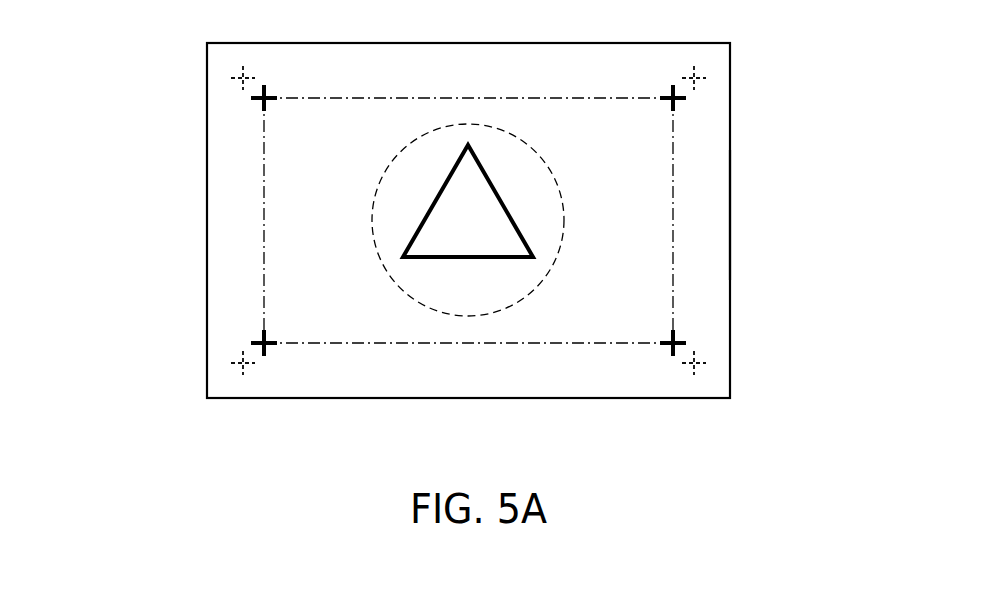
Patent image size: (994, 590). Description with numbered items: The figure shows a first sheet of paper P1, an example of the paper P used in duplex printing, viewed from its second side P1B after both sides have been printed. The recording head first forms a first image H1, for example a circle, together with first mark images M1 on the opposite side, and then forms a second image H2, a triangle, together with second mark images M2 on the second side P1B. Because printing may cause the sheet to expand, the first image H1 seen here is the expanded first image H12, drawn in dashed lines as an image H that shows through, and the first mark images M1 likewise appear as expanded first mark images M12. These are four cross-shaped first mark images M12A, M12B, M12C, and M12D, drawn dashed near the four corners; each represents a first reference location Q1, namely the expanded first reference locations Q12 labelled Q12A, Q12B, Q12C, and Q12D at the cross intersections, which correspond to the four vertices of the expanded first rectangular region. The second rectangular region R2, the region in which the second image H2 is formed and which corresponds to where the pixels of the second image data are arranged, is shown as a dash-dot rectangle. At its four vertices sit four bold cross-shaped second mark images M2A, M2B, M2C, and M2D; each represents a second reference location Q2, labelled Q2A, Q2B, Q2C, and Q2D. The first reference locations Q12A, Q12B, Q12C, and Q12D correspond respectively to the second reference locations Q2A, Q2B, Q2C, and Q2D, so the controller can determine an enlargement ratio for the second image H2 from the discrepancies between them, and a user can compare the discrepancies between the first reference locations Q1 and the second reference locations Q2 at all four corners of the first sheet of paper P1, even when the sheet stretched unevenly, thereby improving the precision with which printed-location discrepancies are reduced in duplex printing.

The paper P is at (546, 205).
The first sheet of paper P1 is at (779, 42).
The second side P1B is at (700, 215).
The second rectangular region R2 is at (675, 252).
The image H is at (512, 232).
The first image H1 is at (512, 220).
The first image H12 is at (533, 150).
The second image H2 is at (517, 258).
The first mark image M1 is at (473, 219).
The first mark image M12 is at (473, 219).
The first mark image M12A is at (681, 77).
The first mark image M12B is at (681, 364).
The first mark image M12C is at (256, 364).
The first mark image M12D is at (256, 77).
The first reference location Q1 is at (473, 220).
The first reference location Q12 is at (473, 220).
The first reference location Q12A is at (694, 79).
The first reference location Q12B is at (694, 362).
The first reference location Q12C is at (243, 362).
The first reference location Q12D is at (243, 79).
The second mark image M2 is at (469, 220).
The second mark image M2A is at (679, 100).
The second mark image M2B is at (679, 341).
The second mark image M2C is at (258, 341).
The second mark image M2D is at (258, 100).
The second reference location Q2 is at (469, 220).
The second reference location Q2A is at (675, 100).
The second reference location Q2B is at (675, 341).
The second reference location Q2C is at (262, 341).
The second reference location Q2D is at (262, 100).